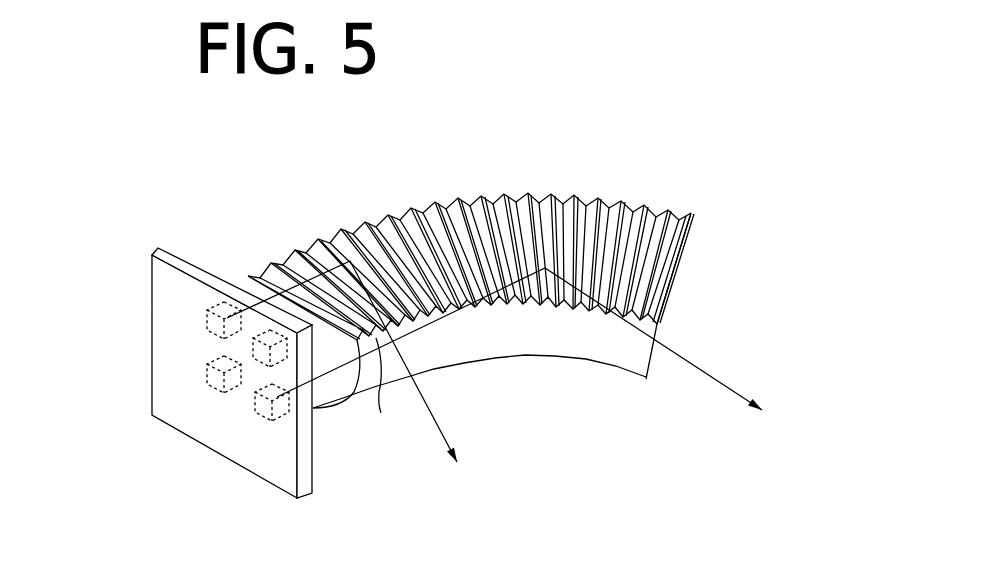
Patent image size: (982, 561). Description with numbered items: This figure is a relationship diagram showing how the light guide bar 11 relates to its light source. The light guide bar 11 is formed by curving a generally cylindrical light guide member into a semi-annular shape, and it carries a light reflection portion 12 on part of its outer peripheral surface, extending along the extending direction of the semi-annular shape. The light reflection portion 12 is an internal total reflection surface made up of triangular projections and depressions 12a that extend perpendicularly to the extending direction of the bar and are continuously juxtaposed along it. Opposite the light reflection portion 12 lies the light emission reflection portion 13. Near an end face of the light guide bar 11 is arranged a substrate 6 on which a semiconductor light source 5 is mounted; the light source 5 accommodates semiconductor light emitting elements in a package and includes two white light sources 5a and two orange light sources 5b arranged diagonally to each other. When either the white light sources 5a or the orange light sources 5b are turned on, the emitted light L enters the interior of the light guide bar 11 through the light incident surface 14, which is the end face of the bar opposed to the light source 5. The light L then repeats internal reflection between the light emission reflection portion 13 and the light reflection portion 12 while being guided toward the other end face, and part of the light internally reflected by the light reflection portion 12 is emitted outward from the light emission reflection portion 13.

The semiconductor light source 5 is at (174, 413).
The white light source 5a is at (203, 409).
The orange light source 5b is at (207, 330).
The substrate 6 is at (158, 248).
The light guide bar 11 is at (498, 281).
The light reflection portion 12 is at (498, 254).
The triangular projections and depressions 12a is at (417, 208).
The light emission reflection portion 13 is at (477, 358).
The light incident surface 14 is at (333, 385).
The light L is at (283, 258).